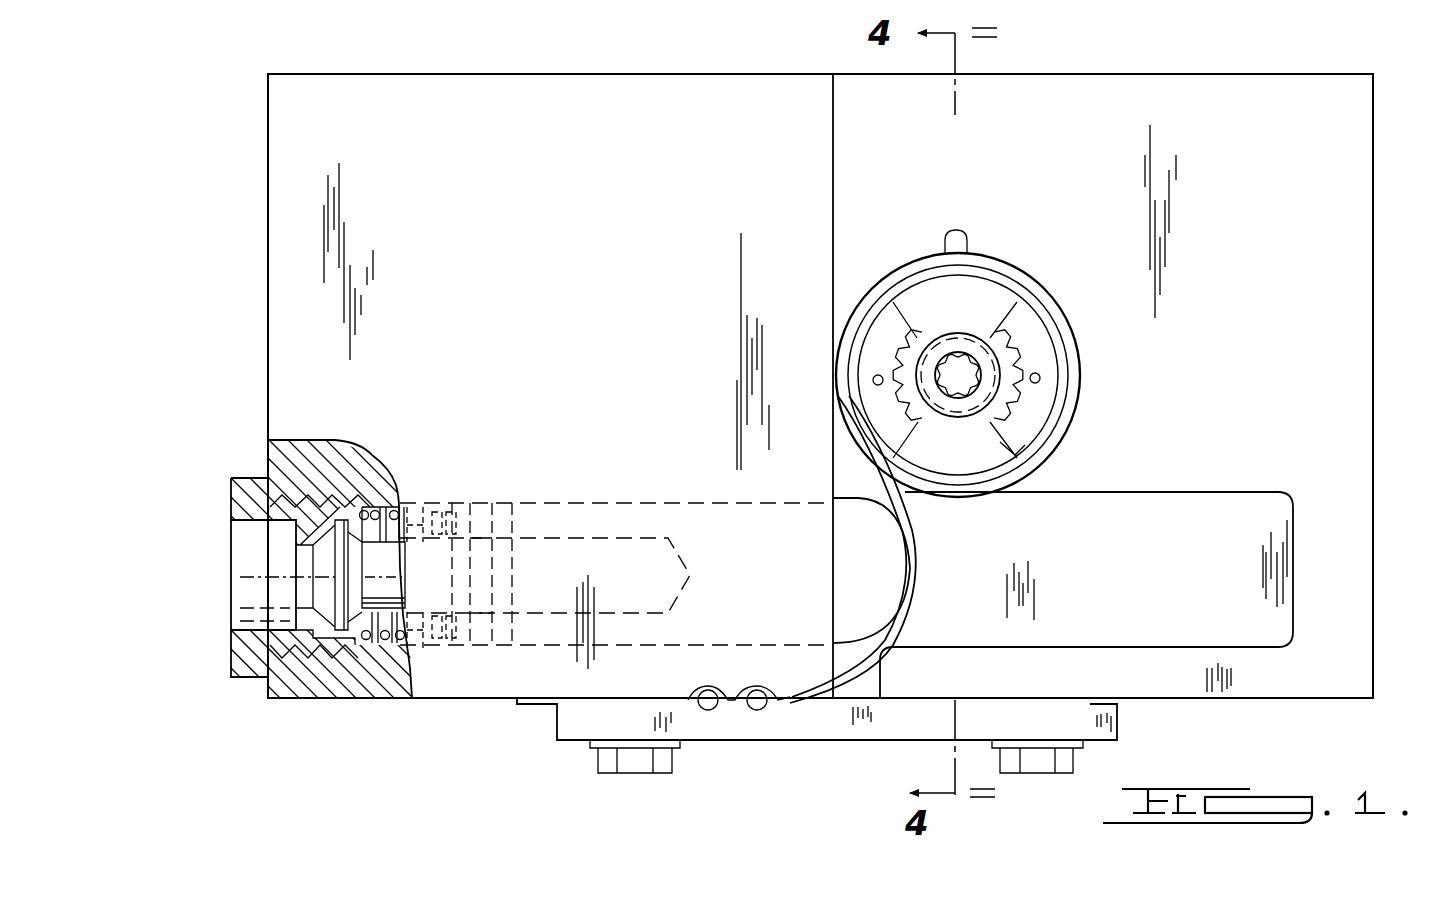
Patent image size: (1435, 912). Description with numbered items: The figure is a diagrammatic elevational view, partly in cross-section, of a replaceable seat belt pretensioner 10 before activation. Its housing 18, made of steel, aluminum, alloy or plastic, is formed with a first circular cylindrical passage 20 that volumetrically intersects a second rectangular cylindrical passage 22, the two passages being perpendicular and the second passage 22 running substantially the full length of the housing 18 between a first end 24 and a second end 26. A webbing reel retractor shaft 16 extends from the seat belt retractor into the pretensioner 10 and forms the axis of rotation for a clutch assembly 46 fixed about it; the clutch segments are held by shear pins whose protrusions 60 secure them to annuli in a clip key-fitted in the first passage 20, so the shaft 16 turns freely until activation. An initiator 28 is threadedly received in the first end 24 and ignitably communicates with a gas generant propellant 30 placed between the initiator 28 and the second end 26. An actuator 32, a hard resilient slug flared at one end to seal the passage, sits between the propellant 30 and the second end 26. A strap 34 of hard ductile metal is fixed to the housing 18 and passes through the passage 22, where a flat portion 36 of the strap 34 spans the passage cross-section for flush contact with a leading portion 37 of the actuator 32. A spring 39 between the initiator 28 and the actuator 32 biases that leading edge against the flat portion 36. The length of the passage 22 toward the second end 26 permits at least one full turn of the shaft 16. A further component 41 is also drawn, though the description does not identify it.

The pretensioner 10 is at (575, 50).
The housing 18 is at (463, 120).
The first circular cylindrical passage 20 is at (912, 265).
The webbing reel retractor shaft 16 is at (963, 342).
The clutch assembly 46 is at (888, 332).
The protrusions 60 is at (1042, 378).
The second rectangular cylindrical passage 22 is at (1178, 510).
The second end 26 is at (1268, 626).
The initiator 28 is at (252, 545).
The gas generant propellant 30 is at (478, 522).
The first end 24 is at (570, 520).
The rod 41 is at (636, 548).
The actuator 32 is at (785, 503).
The flat portion 36 is at (925, 565).
The leading portion 37 is at (912, 557).
The strap 34 is at (845, 680).
The spring 39 is at (407, 648).